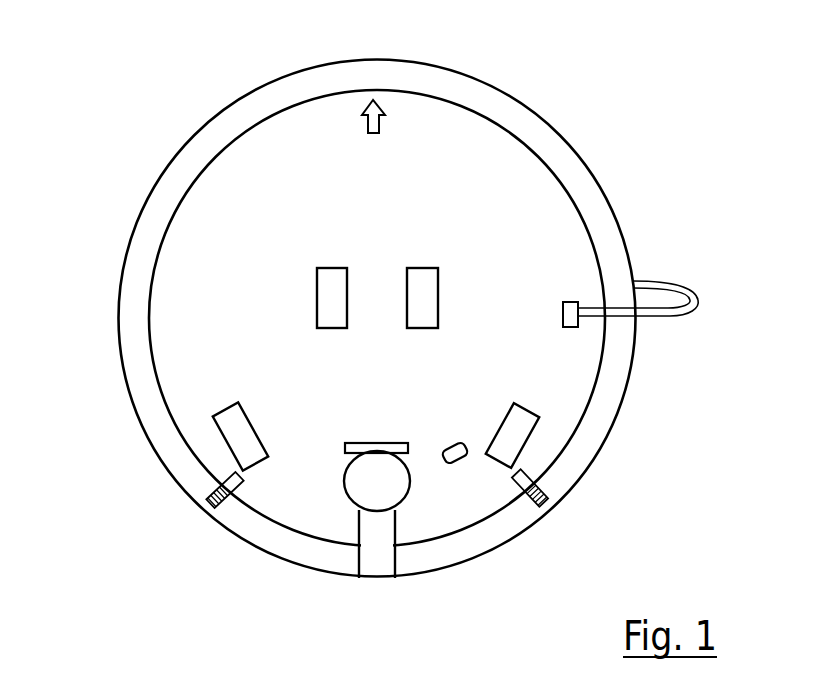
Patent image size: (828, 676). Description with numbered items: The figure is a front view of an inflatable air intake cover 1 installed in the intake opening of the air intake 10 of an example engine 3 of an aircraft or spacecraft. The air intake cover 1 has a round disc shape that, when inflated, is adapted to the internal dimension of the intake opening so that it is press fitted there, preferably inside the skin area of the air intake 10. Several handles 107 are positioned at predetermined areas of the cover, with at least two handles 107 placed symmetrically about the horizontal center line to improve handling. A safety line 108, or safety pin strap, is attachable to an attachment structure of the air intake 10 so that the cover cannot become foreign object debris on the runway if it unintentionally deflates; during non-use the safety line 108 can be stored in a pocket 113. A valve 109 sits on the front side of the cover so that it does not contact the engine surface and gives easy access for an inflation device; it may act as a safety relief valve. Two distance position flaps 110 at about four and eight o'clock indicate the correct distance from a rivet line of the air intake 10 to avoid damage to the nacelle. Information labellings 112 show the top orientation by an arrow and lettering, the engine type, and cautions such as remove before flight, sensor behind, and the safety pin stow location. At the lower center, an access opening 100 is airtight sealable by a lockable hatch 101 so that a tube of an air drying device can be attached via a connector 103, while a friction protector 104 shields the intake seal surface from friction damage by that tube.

The air intake cover 1 is at (563, 185).
The engine 3 is at (168, 178).
The air intake 10 is at (157, 247).
The access opening 100 is at (358, 473).
The hatch 101 is at (345, 447).
The connector 103 is at (355, 493).
The friction protector 104 is at (383, 552).
The handle 107 is at (328, 298).
The safety line 108 is at (683, 284).
The valve 109 is at (452, 458).
The distance position flap 110 is at (212, 488).
The information labelling 112 is at (373, 99).
The pocket 113 is at (580, 318).